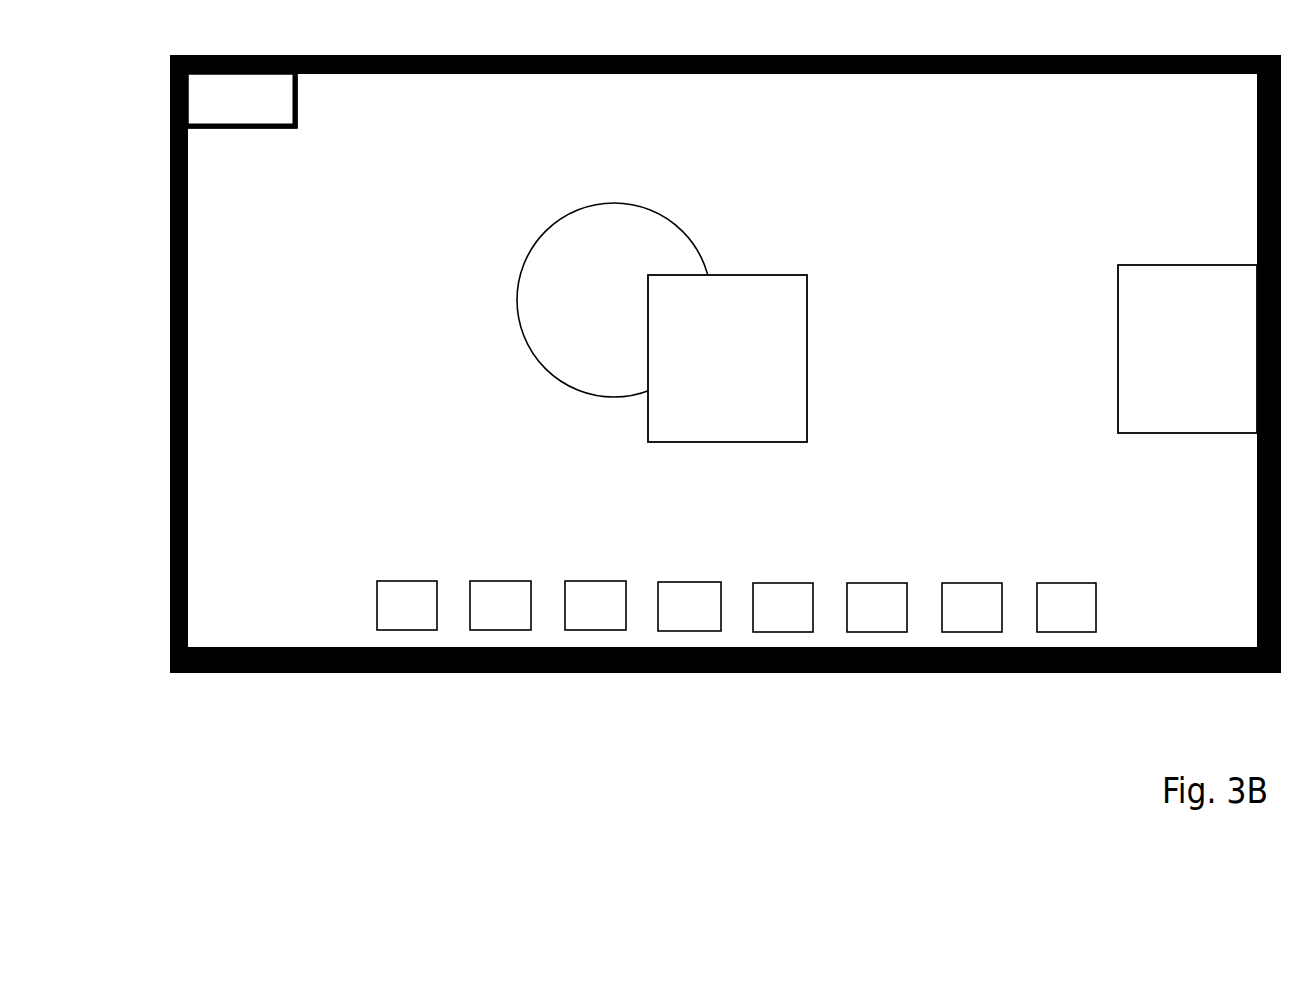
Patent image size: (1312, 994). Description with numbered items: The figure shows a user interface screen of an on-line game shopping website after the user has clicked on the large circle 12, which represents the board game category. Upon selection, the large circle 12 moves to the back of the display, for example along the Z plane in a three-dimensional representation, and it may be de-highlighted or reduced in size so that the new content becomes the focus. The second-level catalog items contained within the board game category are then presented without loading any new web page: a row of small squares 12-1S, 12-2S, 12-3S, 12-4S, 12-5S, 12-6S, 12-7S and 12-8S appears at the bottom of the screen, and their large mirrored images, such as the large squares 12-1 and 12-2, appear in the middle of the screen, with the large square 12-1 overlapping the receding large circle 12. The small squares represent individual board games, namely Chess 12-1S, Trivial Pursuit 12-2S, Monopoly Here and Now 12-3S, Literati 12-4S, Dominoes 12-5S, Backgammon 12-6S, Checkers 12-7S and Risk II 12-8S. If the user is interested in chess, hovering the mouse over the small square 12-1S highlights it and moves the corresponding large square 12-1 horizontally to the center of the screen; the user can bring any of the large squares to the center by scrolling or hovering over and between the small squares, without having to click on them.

The large circle 12 is at (725, 364).
The large square 12-1 is at (759, 318).
The large square 12-2 is at (1162, 313).
The small square 12-1S is at (404, 667).
The small square 12-2S is at (498, 653).
The small square 12-3S is at (593, 667).
The small square 12-4S is at (688, 654).
The small square 12-5S is at (780, 668).
The small square 12-6S is at (874, 655).
The small square 12-7S is at (969, 668).
The small square 12-8S is at (1063, 655).